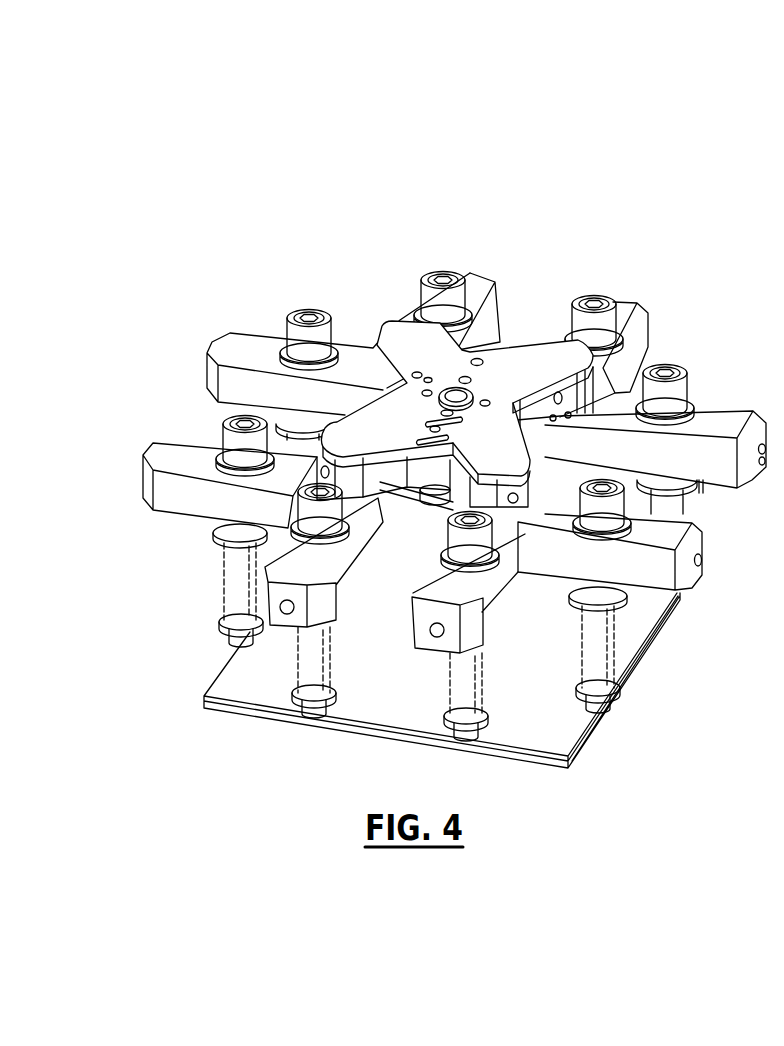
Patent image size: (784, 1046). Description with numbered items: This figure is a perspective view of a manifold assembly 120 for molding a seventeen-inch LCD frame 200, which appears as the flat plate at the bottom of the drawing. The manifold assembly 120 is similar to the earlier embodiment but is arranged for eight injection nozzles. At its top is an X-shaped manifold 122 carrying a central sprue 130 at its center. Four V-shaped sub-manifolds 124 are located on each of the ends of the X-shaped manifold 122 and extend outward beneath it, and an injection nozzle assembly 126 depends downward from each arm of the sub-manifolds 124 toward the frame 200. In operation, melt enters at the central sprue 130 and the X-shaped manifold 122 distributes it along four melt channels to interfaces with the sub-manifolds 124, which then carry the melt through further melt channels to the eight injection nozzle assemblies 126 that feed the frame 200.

The manifold assembly 120 is at (241, 209).
The X-shaped manifold 122 is at (402, 318).
The V-shaped sub-manifolds 124 is at (208, 302).
The injection nozzle assembly 126 is at (224, 597).
The central sprue 130 is at (483, 358).
The frame 200 is at (597, 722).